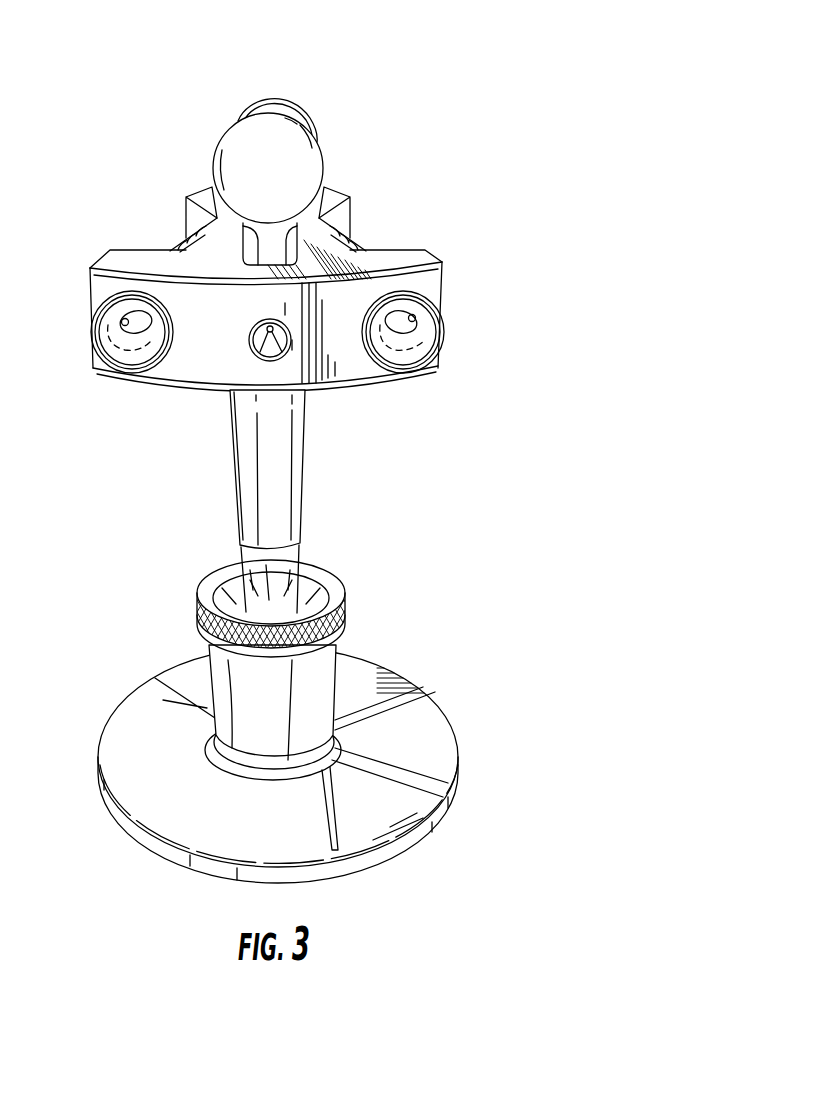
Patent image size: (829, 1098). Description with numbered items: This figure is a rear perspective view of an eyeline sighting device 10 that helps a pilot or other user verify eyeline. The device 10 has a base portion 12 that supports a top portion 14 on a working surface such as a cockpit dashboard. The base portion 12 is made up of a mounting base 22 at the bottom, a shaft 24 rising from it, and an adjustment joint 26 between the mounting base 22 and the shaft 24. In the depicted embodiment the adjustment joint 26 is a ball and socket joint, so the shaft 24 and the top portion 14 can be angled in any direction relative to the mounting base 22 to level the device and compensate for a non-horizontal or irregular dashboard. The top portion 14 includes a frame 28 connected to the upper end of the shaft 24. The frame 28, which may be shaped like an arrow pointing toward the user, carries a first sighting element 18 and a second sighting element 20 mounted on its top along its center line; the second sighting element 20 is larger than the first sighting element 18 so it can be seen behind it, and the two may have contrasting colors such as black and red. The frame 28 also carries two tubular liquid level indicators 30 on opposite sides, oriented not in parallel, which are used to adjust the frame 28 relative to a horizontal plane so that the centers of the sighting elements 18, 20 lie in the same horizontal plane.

The eyeline sighting device 10 is at (588, 62).
The base portion 12 is at (434, 634).
The top portion 14 is at (414, 182).
The first sighting element 18 is at (260, 93).
The second sighting element 20 is at (307, 153).
The mounting base 22 is at (406, 767).
The shaft 24 is at (284, 516).
The adjustment joint 26 is at (313, 621).
The frame 28 is at (422, 259).
The level indicator 30 is at (113, 347).